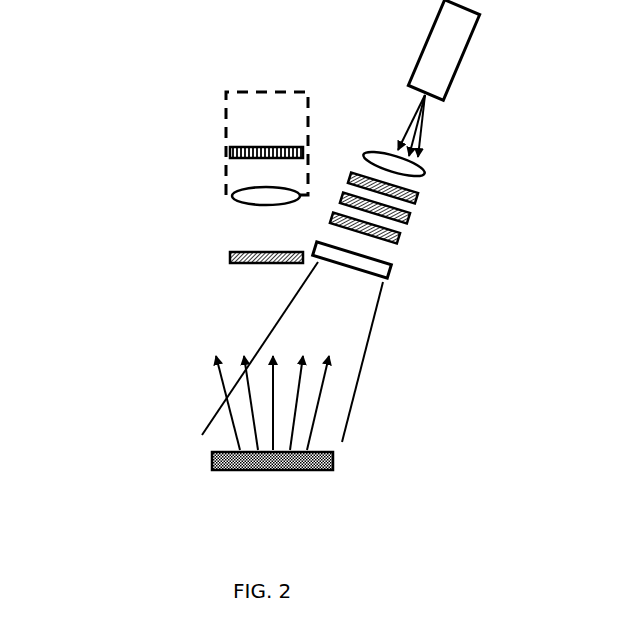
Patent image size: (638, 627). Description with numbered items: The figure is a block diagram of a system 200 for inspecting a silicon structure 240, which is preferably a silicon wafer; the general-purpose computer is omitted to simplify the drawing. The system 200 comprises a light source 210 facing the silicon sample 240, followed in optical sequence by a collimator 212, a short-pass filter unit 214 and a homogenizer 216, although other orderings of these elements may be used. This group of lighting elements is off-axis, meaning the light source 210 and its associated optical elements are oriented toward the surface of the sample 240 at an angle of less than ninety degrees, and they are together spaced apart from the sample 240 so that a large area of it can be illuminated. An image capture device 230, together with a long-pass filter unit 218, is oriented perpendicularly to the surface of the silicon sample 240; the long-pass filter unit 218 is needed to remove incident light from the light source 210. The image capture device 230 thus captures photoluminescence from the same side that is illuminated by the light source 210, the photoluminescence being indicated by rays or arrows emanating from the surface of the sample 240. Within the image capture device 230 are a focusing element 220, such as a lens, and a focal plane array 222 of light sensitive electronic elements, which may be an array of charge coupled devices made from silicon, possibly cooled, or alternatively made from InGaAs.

The system 200 is at (113, 195).
The light source 210 is at (463, 58).
The collimator 212 is at (425, 173).
The short-pass filter unit 214 is at (445, 200).
The homogenizer 216 is at (388, 276).
The long-pass filter unit 218 is at (231, 255).
The focusing element 220 is at (232, 196).
The focal plane array 222 is at (231, 149).
The image capture device 230 is at (220, 96).
The silicon structure 240 is at (333, 462).